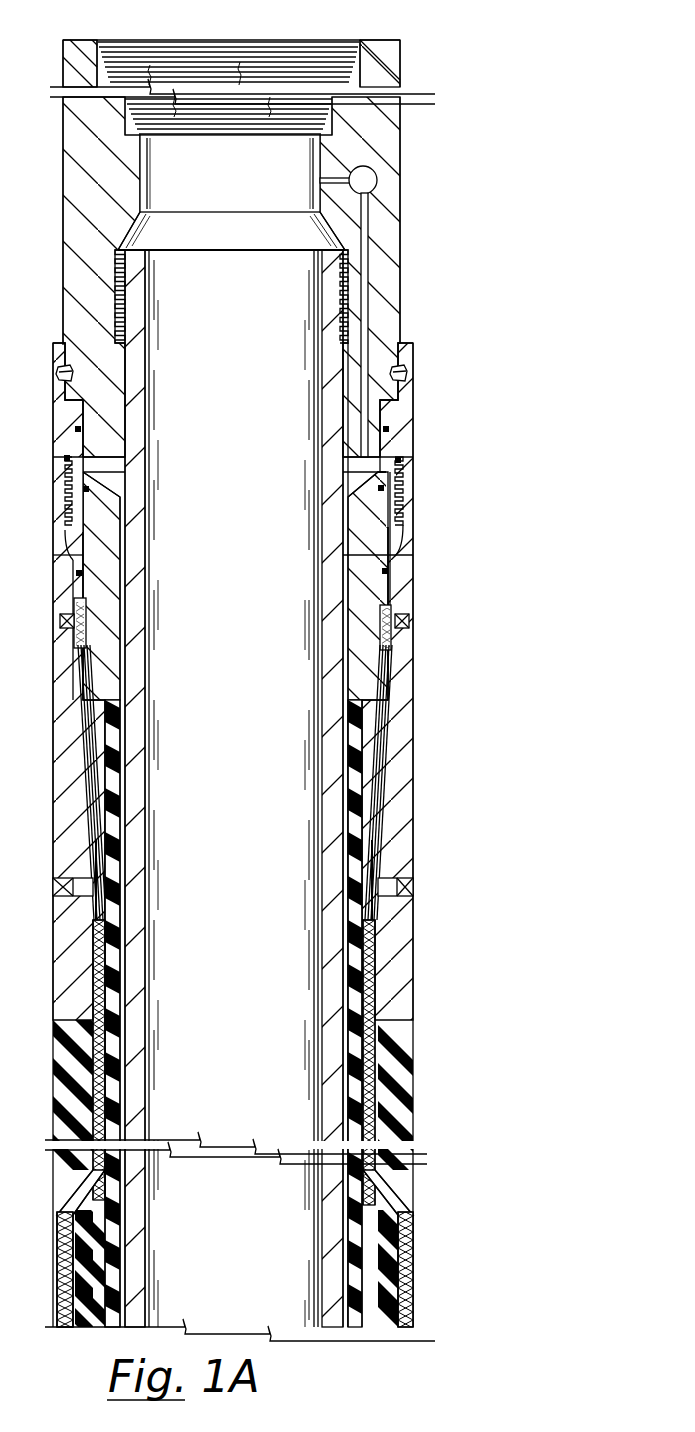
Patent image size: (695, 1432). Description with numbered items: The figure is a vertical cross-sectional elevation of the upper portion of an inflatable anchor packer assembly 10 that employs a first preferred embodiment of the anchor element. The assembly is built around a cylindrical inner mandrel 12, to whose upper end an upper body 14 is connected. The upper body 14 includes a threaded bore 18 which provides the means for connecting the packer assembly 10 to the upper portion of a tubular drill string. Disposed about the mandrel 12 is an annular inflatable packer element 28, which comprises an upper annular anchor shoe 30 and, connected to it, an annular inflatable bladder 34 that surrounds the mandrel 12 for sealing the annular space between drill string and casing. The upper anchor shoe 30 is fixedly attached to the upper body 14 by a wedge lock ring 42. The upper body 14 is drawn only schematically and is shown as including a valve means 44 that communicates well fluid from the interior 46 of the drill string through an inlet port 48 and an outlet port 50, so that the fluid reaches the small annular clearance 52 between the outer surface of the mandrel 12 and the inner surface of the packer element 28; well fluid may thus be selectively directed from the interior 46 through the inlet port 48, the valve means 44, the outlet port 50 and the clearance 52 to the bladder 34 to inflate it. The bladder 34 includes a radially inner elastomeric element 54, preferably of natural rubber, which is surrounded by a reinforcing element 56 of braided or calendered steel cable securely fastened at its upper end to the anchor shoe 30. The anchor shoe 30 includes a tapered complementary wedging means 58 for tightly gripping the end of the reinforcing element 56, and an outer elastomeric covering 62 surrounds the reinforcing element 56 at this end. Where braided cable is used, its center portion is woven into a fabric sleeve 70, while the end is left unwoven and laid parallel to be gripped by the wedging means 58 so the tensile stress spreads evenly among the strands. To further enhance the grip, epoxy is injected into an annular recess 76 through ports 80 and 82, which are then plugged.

The inflatable anchor packer assembly 10 is at (292, 685).
The inner mandrel 12 is at (330, 355).
The upper body 14 is at (285, 242).
The threaded bore 18 is at (347, 42).
The inflatable packer element 28 is at (291, 1021).
The upper annular anchor shoe 30 is at (304, 835).
The inflatable bladder 34 is at (387, 1250).
The wedge lock ring 42 is at (405, 372).
The valve means 44 is at (365, 168).
The interior 46 is at (240, 520).
The inlet port 48 is at (333, 177).
The outlet port 50 is at (364, 240).
The annular clearance 52 is at (345, 556).
The inner elastomeric element 54 is at (375, 843).
The reinforcing element 56 is at (380, 1073).
The tapered wedging means 58 is at (394, 744).
The outer elastomeric covering 62 is at (405, 1112).
The fabric sleeve 70 is at (280, 1123).
The annular recess 76 is at (380, 612).
The port 80 is at (398, 622).
The port 82 is at (388, 878).